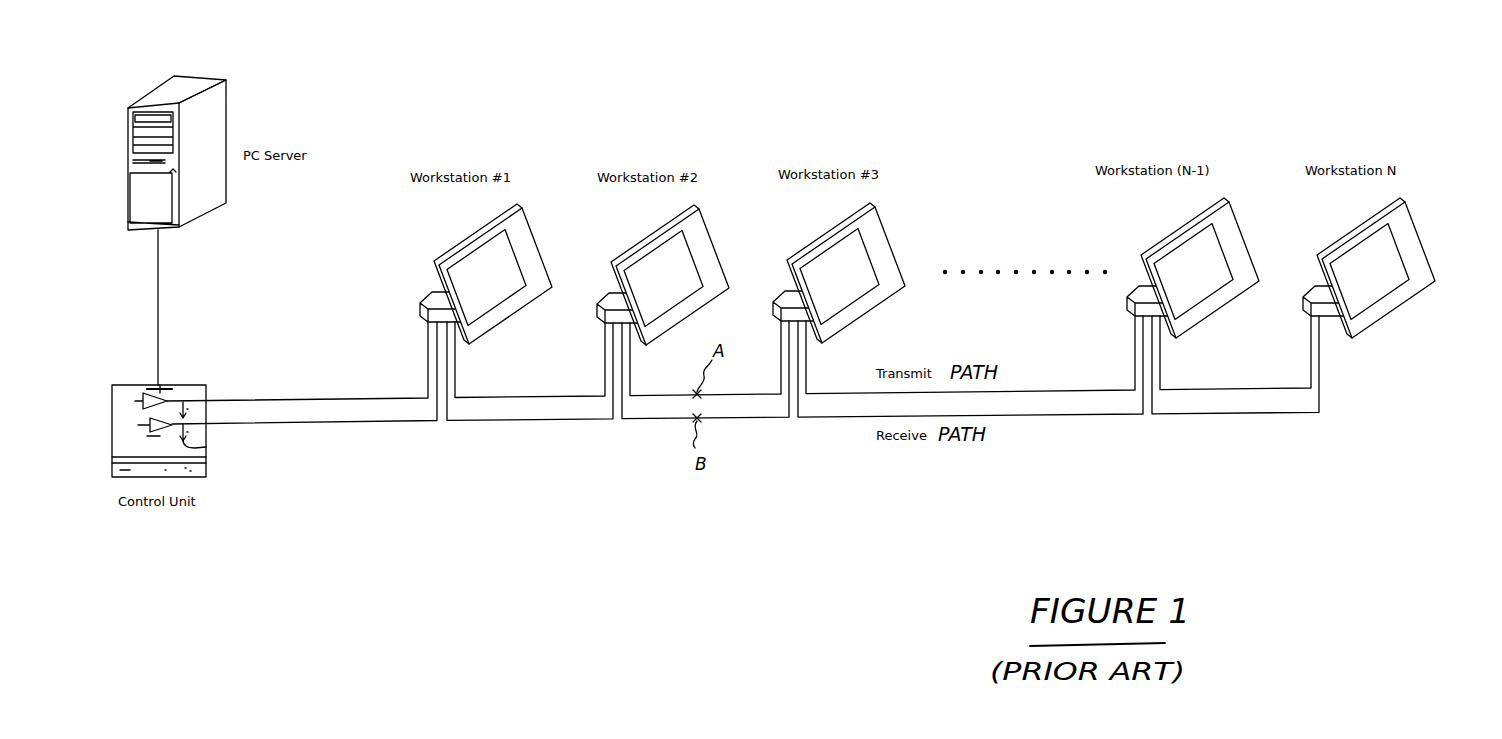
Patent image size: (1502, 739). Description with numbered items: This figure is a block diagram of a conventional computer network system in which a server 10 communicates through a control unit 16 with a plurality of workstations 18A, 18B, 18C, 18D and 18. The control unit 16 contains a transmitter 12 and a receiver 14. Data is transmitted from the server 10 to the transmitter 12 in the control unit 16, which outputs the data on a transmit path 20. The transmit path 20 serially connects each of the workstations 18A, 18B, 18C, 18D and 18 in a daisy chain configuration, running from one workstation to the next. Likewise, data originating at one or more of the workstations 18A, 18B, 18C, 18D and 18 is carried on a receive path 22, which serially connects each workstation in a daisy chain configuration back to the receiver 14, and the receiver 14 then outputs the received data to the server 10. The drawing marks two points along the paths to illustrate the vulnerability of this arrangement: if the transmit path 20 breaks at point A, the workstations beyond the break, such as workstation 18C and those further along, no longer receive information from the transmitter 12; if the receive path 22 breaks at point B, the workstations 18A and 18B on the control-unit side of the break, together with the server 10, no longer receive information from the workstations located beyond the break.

The server 10 is at (228, 92).
The transmitter 12 is at (160, 390).
The receiver 14 is at (208, 446).
The control unit 16 is at (206, 383).
The workstation 18A is at (537, 223).
The workstation 18B is at (712, 223).
The workstation 18C is at (887, 220).
The workstation 18D is at (1243, 213).
The workstation 18 is at (1418, 210).
The transmit path 20 is at (323, 398).
The receive path 22 is at (381, 422).